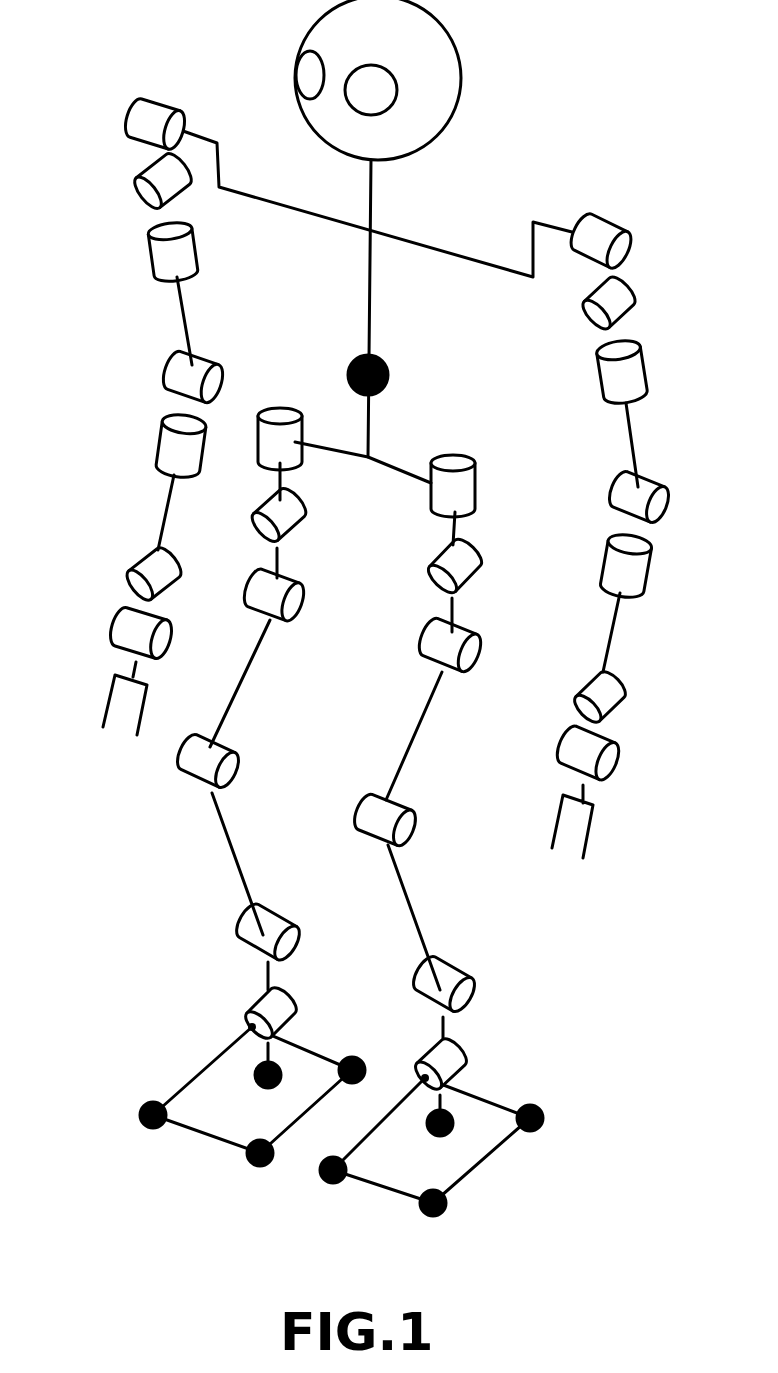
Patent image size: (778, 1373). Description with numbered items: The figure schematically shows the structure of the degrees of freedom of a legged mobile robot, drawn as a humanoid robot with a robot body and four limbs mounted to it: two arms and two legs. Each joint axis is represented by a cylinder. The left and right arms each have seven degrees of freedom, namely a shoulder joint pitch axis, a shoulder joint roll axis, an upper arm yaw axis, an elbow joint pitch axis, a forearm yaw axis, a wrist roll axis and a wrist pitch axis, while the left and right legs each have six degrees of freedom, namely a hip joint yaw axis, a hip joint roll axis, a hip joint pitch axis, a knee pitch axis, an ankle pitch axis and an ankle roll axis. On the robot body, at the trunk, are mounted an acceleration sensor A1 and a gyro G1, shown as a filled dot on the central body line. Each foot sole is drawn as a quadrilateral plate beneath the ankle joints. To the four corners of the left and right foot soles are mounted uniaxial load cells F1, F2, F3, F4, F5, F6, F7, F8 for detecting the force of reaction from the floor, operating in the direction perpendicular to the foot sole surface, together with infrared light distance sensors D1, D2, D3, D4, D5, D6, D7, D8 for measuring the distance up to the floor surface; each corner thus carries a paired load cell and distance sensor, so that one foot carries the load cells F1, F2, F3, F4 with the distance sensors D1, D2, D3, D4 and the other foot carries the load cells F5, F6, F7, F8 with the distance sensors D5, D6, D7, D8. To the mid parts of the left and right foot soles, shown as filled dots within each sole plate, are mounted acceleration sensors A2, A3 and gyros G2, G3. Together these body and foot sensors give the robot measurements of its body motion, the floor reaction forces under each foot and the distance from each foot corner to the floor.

The acceleration sensor A1 is at (422, 375).
The gyro G1 is at (422, 375).
The acceleration sensor A2 is at (544, 1149).
The gyro G2 is at (453, 1123).
The acceleration sensor A3 is at (169, 1066).
The gyro G3 is at (253, 1077).
The uniaxial load cell F1 is at (498, 1059).
The infrared light distance sensor D1 is at (498, 1059).
The uniaxial load cell F2 is at (580, 1115).
The infrared light distance sensor D2 is at (580, 1115).
The uniaxial load cell F3 is at (484, 1209).
The infrared light distance sensor D3 is at (484, 1209).
The uniaxial load cell F4 is at (338, 1187).
The infrared light distance sensor D4 is at (338, 1187).
The uniaxial load cell F5 is at (368, 1051).
The infrared light distance sensor D5 is at (368, 1051).
The uniaxial load cell F6 is at (201, 1013).
The infrared light distance sensor D6 is at (201, 1013).
The uniaxial load cell F7 is at (108, 1113).
The infrared light distance sensor D7 is at (108, 1113).
The uniaxial load cell F8 is at (237, 1168).
The infrared light distance sensor D8 is at (237, 1168).